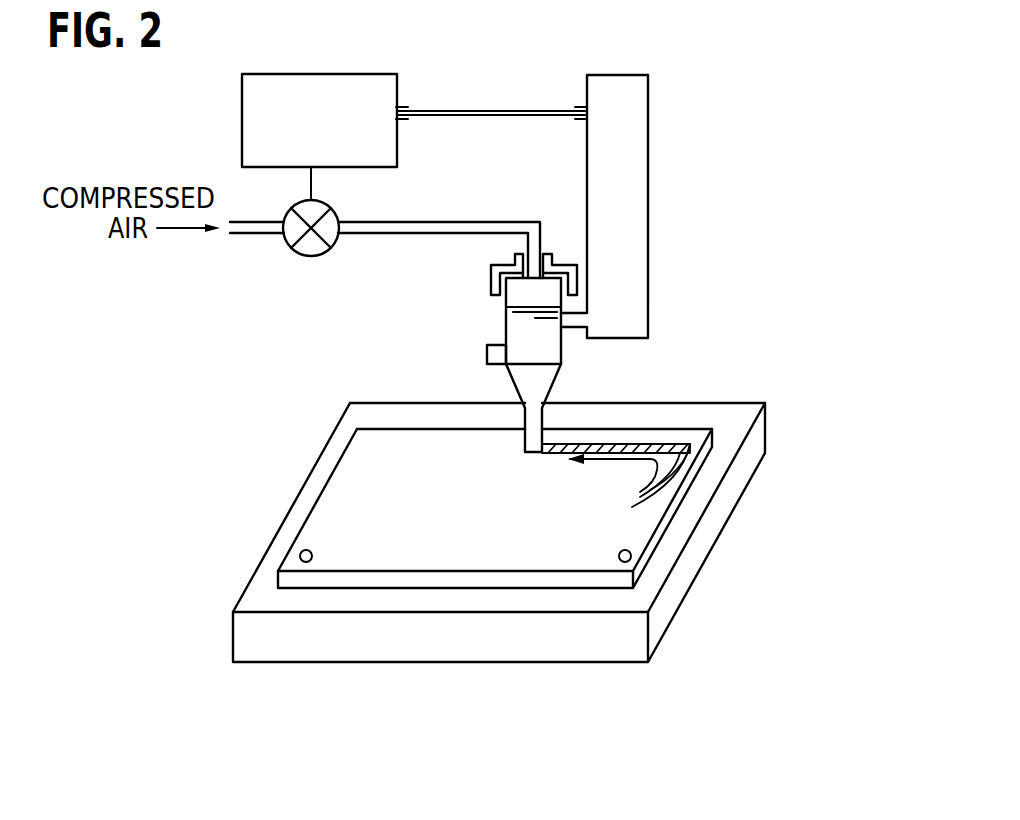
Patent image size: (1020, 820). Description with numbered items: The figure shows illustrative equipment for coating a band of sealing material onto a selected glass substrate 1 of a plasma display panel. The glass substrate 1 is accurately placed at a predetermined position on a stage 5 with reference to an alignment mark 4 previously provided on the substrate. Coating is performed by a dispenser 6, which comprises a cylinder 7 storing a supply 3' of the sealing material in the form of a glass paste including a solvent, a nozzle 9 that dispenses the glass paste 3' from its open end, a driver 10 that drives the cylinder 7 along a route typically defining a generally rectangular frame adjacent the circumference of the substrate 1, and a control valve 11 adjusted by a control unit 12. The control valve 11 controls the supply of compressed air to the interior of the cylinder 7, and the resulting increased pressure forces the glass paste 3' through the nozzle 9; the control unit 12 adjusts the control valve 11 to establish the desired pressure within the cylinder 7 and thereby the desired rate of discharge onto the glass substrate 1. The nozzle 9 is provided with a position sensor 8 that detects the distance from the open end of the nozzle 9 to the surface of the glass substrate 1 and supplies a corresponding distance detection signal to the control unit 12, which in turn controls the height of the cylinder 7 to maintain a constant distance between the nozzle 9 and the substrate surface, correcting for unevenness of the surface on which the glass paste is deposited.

The glass substrate 1 is at (525, 545).
The supply of sealing material 3' is at (663, 407).
The alignment mark 4 is at (632, 555).
The stage 5 is at (370, 640).
The dispenser 6 is at (487, 92).
The cylinder 7 is at (506, 328).
The position sensor 8 is at (487, 357).
The nozzle 9 is at (525, 423).
The driver 10 is at (632, 230).
The control valve 11 is at (287, 243).
The control unit 12 is at (348, 74).